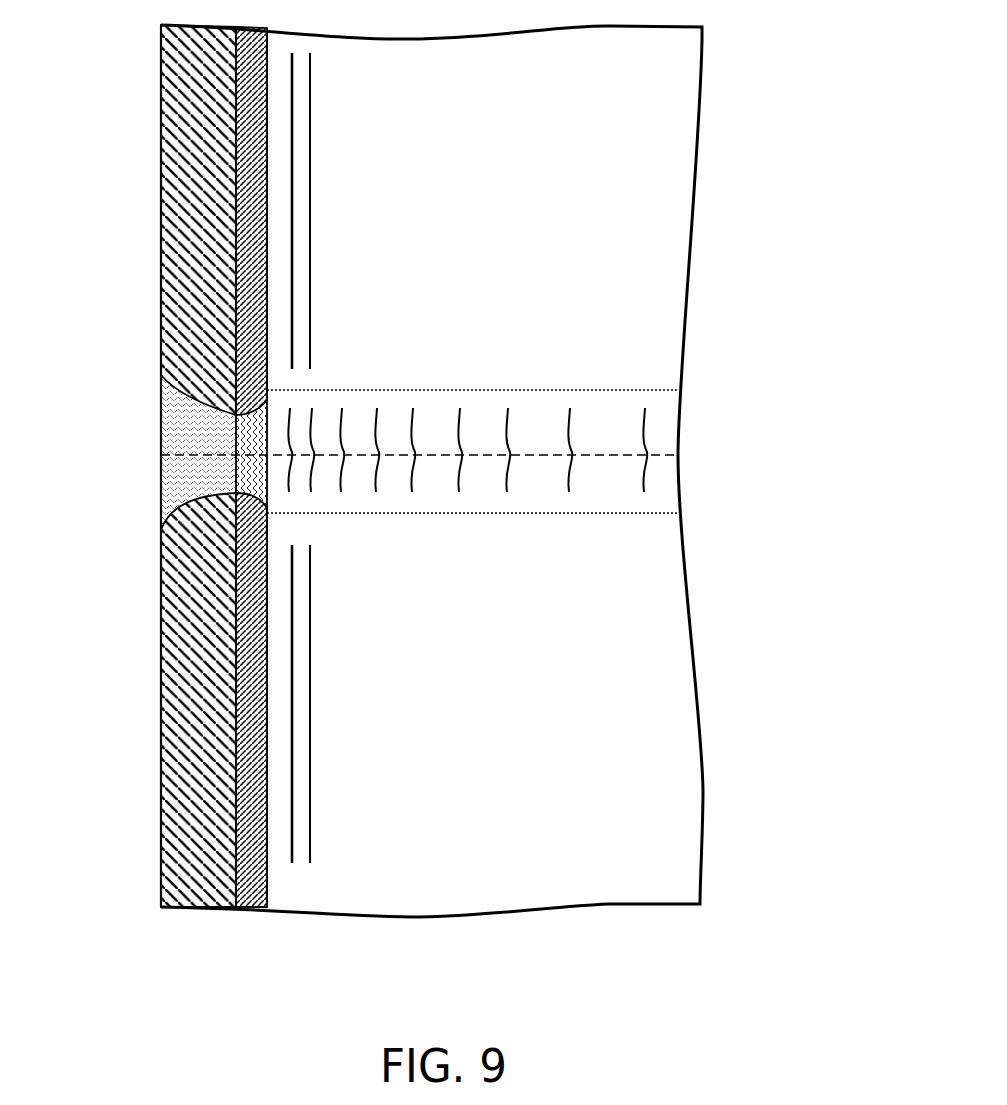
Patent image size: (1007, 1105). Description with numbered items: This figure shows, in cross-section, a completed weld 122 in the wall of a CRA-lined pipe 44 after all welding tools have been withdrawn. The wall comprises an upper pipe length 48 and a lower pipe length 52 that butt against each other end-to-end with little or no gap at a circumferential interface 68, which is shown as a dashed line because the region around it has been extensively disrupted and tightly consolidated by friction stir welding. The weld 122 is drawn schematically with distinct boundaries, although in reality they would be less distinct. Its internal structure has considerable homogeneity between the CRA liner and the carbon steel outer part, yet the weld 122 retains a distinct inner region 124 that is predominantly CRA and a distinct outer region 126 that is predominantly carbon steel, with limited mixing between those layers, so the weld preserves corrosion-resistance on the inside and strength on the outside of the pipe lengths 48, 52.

The pipe 44 is at (117, 110).
The upper pipe length 48 is at (658, 252).
The lower pipe length 52 is at (655, 658).
The circumferential interface 68 is at (528, 455).
The weld 122 is at (443, 400).
The inner region 124 is at (267, 418).
The outer region 126 is at (187, 480).